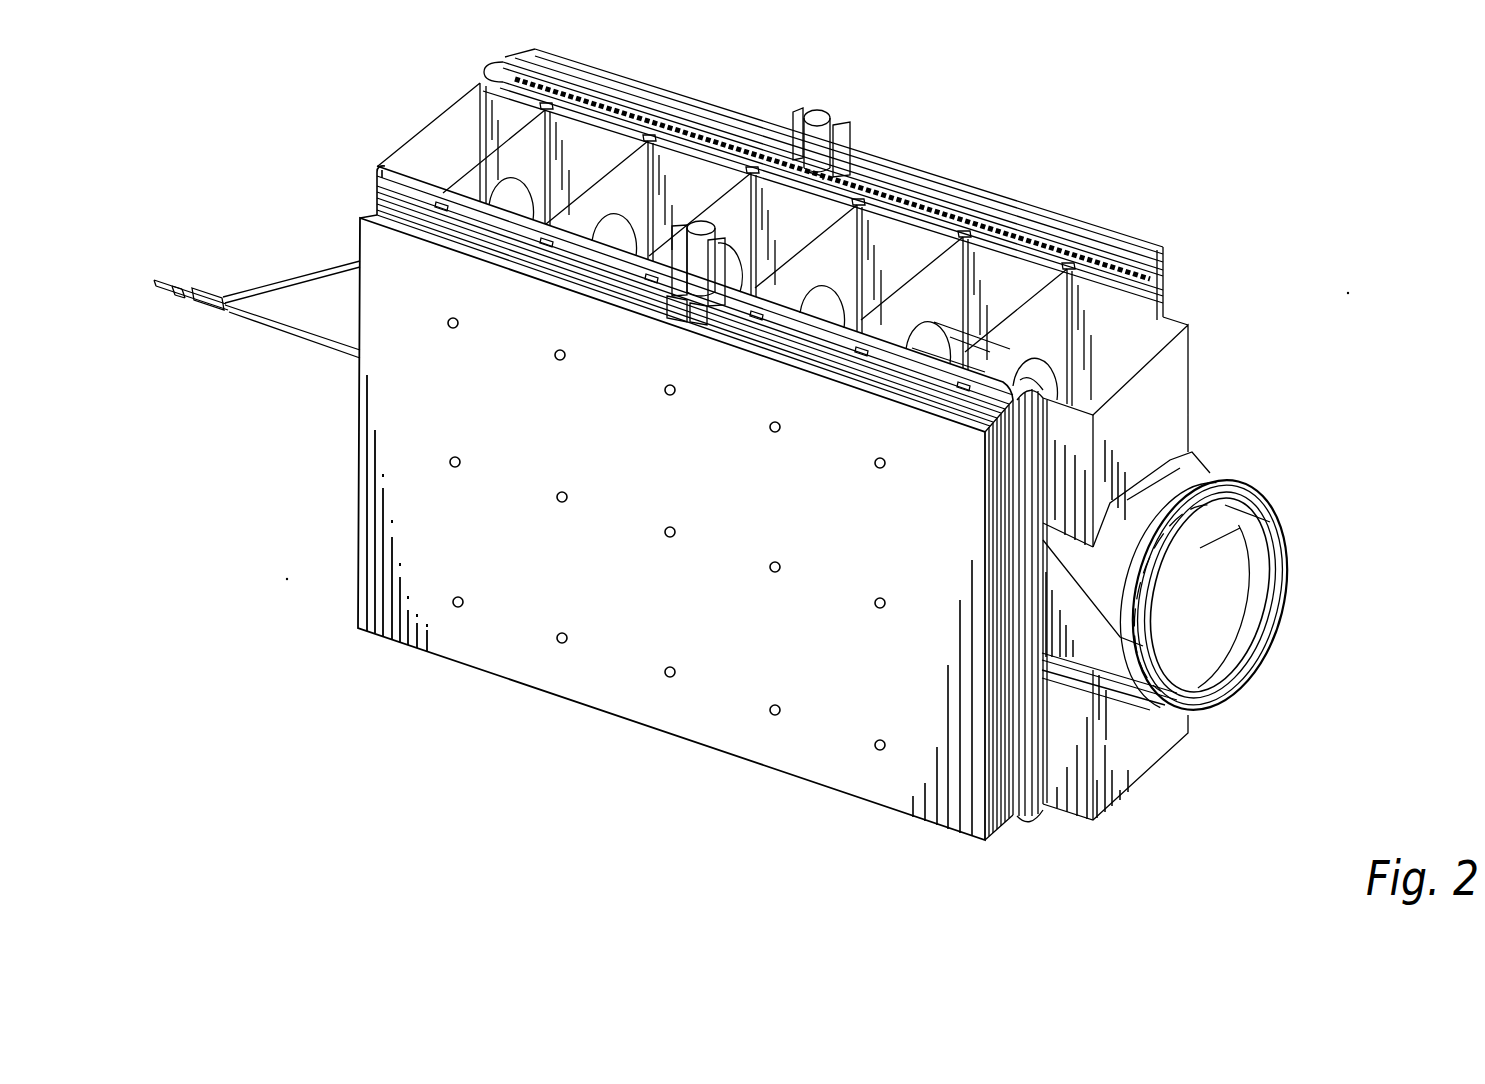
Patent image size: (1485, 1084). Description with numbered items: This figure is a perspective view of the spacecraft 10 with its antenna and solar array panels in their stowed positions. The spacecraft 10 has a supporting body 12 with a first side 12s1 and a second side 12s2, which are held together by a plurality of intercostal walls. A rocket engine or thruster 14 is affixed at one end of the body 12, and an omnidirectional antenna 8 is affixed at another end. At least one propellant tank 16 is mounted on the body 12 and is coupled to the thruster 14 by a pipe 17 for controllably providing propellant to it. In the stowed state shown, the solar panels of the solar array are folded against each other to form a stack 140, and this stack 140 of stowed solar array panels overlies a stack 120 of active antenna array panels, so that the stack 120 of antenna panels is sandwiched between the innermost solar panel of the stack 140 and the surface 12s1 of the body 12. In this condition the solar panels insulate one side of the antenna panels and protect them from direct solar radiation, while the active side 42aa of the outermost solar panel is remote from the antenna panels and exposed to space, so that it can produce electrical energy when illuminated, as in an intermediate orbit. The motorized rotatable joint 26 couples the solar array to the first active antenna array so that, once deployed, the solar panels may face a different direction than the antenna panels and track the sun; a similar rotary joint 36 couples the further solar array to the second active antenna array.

The spacecraft 10 is at (357, 710).
The active side of solar panel 42aa is at (377, 420).
The omnidirectional antenna 8 is at (213, 298).
The first side of body 12s1 is at (383, 182).
The second side of body 12s2 is at (492, 103).
The body 12 is at (1130, 778).
The propellant tank 16 is at (1004, 340).
The pipe 17 is at (1120, 385).
The rotary joint 36 is at (818, 110).
The rotatable joint 26 is at (700, 222).
The stack of solar array panels 140 is at (1000, 842).
The stack of active antenna array panels 120 is at (1025, 824).
The thruster 14 is at (1262, 583).